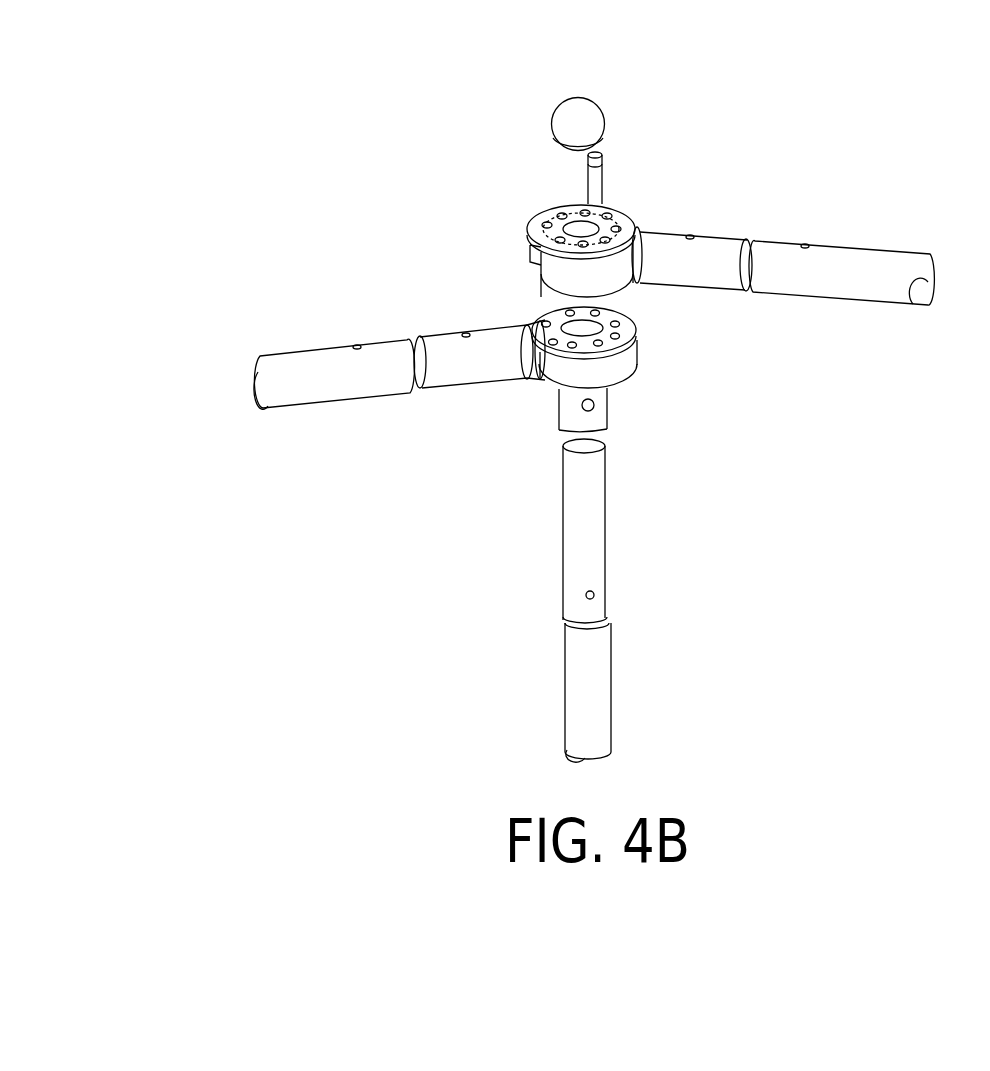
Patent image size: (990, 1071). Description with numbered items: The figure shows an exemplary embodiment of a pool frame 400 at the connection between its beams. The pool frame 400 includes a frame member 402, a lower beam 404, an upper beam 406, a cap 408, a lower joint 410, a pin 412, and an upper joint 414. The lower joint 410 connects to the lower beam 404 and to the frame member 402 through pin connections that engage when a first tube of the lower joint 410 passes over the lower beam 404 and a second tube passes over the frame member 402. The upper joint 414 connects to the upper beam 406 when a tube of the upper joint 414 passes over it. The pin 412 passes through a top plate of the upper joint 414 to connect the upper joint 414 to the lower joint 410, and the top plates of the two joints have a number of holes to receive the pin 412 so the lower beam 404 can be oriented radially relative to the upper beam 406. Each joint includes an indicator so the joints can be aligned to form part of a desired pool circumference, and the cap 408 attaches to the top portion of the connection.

The pool frame 400 is at (178, 60).
The frame member 402 is at (565, 635).
The lower beam 404 is at (315, 343).
The upper beam 406 is at (838, 247).
The cap 408 is at (590, 100).
The lower joint 410 is at (547, 385).
The pin 412 is at (587, 188).
The upper joint 414 is at (627, 215).